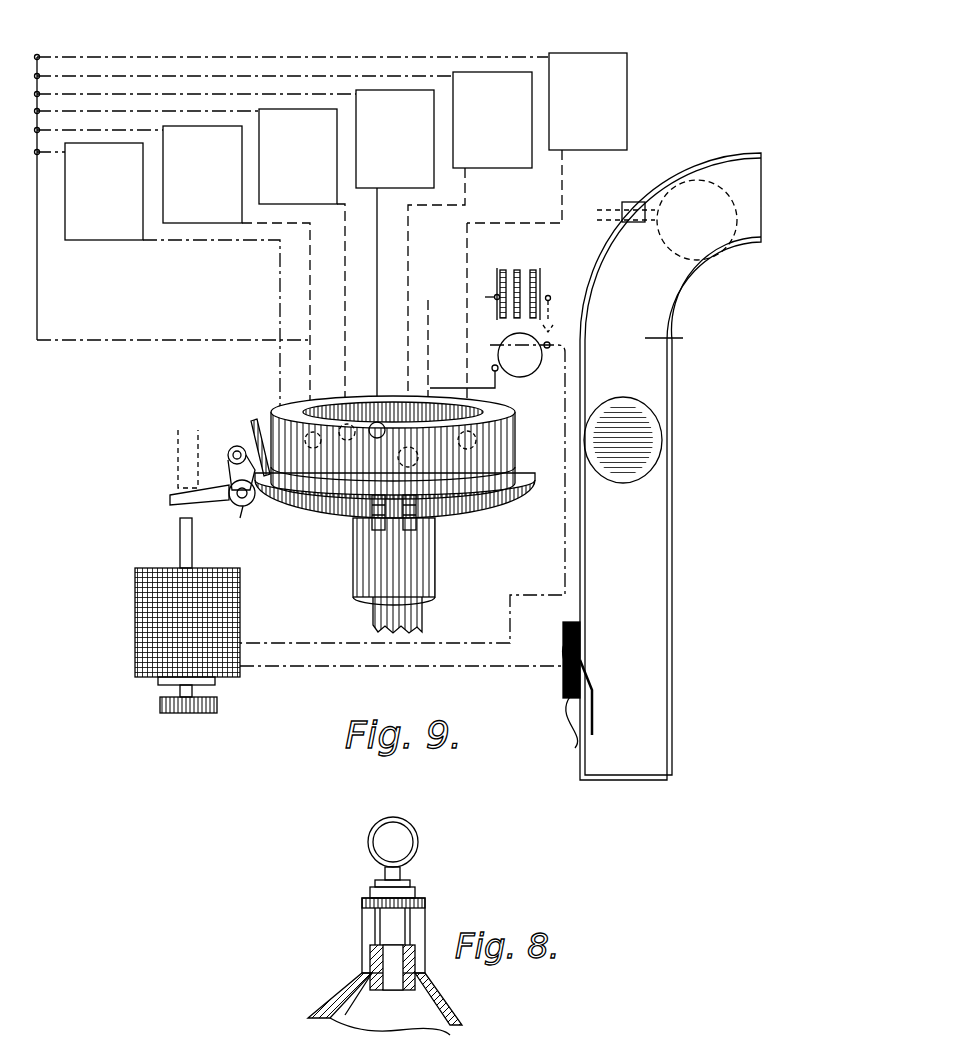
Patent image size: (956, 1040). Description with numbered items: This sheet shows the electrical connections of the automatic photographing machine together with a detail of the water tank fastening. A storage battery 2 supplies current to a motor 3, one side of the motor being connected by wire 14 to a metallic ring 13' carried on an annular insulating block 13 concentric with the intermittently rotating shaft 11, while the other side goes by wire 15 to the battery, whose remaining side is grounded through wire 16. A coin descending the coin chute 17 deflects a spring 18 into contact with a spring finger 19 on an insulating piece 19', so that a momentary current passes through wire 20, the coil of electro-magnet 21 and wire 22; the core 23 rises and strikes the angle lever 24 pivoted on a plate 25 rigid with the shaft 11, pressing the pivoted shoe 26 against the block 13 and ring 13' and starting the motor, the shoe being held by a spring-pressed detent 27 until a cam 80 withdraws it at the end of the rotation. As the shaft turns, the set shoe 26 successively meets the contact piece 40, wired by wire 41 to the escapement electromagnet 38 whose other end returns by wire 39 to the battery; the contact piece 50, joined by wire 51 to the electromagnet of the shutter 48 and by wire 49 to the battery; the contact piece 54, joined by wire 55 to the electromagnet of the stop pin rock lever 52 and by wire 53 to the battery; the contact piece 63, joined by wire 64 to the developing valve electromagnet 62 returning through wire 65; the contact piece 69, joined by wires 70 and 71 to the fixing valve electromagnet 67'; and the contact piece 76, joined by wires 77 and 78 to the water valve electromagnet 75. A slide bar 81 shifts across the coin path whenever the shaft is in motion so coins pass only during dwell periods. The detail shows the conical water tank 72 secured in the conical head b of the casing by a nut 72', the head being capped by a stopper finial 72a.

In FIG. 9, the connecting wire 78 is at (447, 58).
In FIG. 9, the connecting wire 71 is at (440, 78).
In FIG. 9, the wire 65 is at (296, 104).
In FIG. 9, the wire 53 is at (196, 119).
In FIG. 9, the wire 49 is at (109, 139).
In FIG. 9, the electromagnet 38 is at (104, 191).
In FIG. 9, the shutter 48 is at (202, 174).
In FIG. 9, the rock lever 52 is at (298, 156).
In FIG. 9, the electromagnet 62 is at (395, 139).
In FIG. 9, the electromagnet 67' is at (492, 120).
In FIG. 9, the electromagnet 75 is at (588, 101).
In FIG. 9, the connecting wire 77 is at (565, 204).
In FIG. 9, the slide bar 81 is at (607, 228).
In FIG. 9, the wire 41 is at (278, 270).
In FIG. 9, the wire 51 is at (312, 272).
In FIG. 9, the wire 55 is at (344, 296).
In FIG. 9, the wire 64 is at (378, 308).
In FIG. 9, the connecting wire 70 is at (409, 266).
In FIG. 9, the contact piece 76 is at (462, 405).
In FIG. 9, the wire 16 is at (428, 334).
In FIG. 9, the wire 39 is at (182, 333).
In FIG. 9, the storage battery 2 is at (512, 272).
In FIG. 9, the wire 15 is at (552, 328).
In FIG. 9, the wire 14 is at (504, 400).
In FIG. 9, the motor 3 is at (536, 370).
In FIG. 9, the coin chute 17 is at (670, 466).
In FIG. 9, the annular block 13 is at (393, 429).
In FIG. 9, the contact piece 50 is at (318, 420).
In FIG. 9, the contact piece 63 is at (384, 420).
In FIG. 9, the contact piece 69 is at (403, 462).
In FIG. 9, the metallic ring 13' is at (536, 450).
In FIG. 9, the plate 25 is at (493, 510).
In FIG. 9, the contact piece 54 is at (355, 482).
In FIG. 9, the shaft 11 is at (373, 620).
In FIG. 9, the pivoted shoe 26 is at (252, 428).
In FIG. 9, the contact piece 40 is at (265, 425).
In FIG. 9, the angle lever 24 is at (250, 512).
In FIG. 9, the spring-pressed detent 27 is at (235, 510).
In FIG. 9, the cam 80 is at (178, 465).
In FIG. 9, the electro-magnet 21 is at (232, 617).
In FIG. 9, the core 23 is at (192, 548).
In FIG. 9, the wire 22 is at (466, 643).
In FIG. 9, the wire 20 is at (470, 670).
In FIG. 9, the insulating piece 19' is at (603, 640).
In FIG. 9, the spring finger 19 is at (551, 698).
In FIG. 9, the spring 18 is at (593, 690).
In FIG. 8, the stopper finial 72a is at (400, 840).
In FIG. 8, the nut 72' is at (431, 928).
In FIG. 8, the conical head b is at (438, 988).
In FIG. 8, the water tank 72 is at (410, 1004).